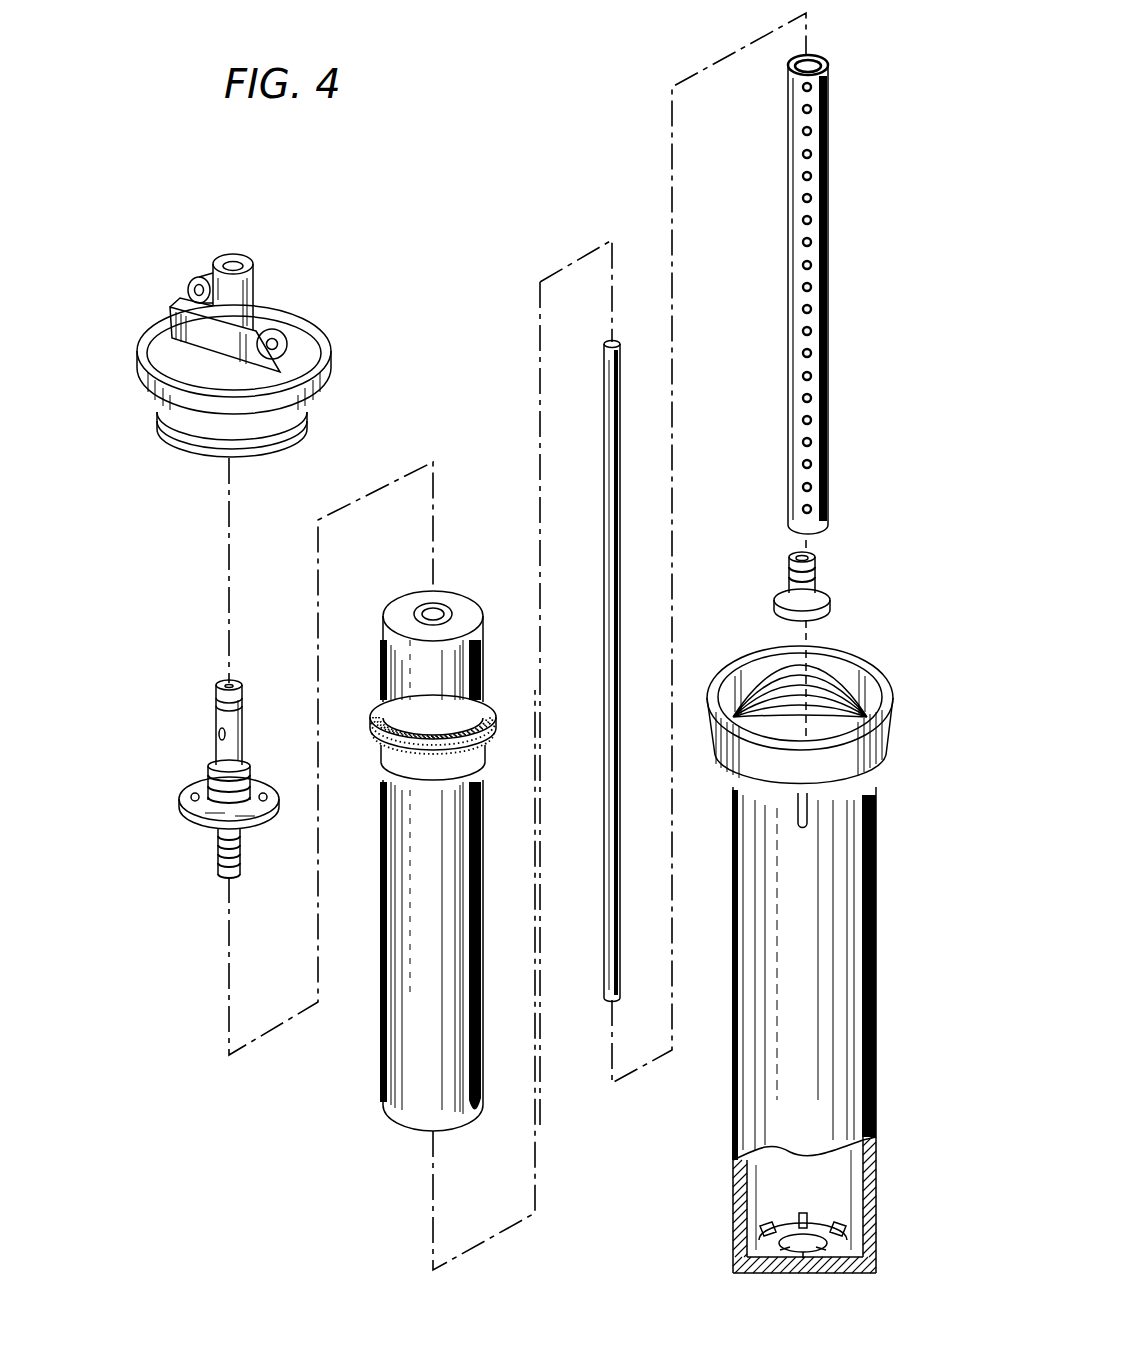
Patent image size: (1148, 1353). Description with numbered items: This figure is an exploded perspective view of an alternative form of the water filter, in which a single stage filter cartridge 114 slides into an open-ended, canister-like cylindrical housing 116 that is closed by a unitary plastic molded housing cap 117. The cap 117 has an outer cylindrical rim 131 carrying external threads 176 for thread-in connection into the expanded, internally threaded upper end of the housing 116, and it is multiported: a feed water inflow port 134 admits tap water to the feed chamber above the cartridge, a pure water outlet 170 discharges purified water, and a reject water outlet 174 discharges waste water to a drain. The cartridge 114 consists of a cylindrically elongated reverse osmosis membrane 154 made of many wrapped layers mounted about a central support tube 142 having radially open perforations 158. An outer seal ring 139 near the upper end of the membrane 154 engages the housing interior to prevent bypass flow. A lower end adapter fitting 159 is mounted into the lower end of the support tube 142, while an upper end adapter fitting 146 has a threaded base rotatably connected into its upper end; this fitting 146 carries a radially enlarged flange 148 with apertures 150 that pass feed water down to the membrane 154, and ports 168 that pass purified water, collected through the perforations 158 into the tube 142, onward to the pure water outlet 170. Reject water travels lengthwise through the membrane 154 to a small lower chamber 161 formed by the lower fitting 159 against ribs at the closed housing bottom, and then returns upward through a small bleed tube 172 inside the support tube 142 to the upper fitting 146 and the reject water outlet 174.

The filter cartridge 114 is at (390, 849).
The cylindrical housing 116 is at (755, 986).
The housing cap 117 is at (515, 465).
The outer cylindrical rim 131 is at (515, 465).
The feed water inflow port 134 is at (185, 300).
The outer seal ring 139 is at (374, 730).
The central support tube 142 is at (642, 332).
The upper end adapter fitting 146 is at (202, 796).
The radially enlarged flange 148 is at (261, 852).
The apertures 150 is at (197, 796).
The reverse osmosis membrane 154 is at (455, 598).
The perforations 158 is at (812, 238).
The lower end adapter fitting 159 is at (825, 592).
The lower chamber 161 is at (775, 1272).
The ports 168 is at (222, 737).
The pure water outlet 170 is at (290, 302).
The bleed tube 172 is at (600, 938).
The reject water outlet 174 is at (192, 297).
The external threads 176 is at (170, 428).